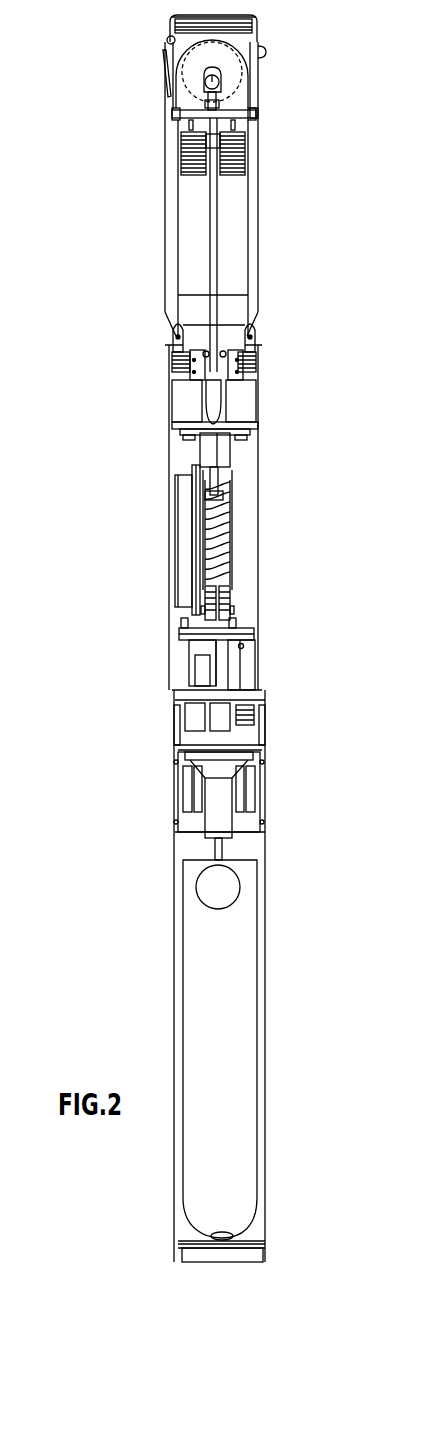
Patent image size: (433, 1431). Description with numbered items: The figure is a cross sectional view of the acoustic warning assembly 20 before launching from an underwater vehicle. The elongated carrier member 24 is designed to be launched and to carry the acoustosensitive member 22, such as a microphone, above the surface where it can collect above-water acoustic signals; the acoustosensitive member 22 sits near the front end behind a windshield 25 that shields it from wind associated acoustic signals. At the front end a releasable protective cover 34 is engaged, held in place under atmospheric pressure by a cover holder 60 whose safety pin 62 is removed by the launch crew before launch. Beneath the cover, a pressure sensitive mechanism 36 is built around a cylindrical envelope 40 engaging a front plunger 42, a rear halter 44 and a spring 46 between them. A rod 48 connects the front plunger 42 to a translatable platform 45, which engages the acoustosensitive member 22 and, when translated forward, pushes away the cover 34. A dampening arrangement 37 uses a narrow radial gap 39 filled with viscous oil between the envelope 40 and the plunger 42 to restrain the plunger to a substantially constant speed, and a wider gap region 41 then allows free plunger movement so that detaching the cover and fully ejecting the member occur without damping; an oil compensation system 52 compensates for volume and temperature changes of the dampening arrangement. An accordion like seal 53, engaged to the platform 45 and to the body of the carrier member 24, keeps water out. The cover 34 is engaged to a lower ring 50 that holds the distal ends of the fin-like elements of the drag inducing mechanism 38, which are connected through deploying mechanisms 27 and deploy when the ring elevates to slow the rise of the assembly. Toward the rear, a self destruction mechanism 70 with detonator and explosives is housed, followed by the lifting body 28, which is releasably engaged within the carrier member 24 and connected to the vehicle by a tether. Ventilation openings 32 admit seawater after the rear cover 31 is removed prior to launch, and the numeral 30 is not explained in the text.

The acoustic warning assembly 20 is at (21, 509).
The acoustosensitive member 22 is at (203, 85).
The carrier member 24 is at (250, 605).
The windshield 25 is at (182, 70).
The deploying mechanisms 27 is at (175, 346).
The lifting body 28 is at (197, 965).
The piston 30 is at (215, 806).
The rear cover 31 is at (187, 1252).
The ventilation openings 32 is at (173, 783).
The protective cover 34 is at (253, 45).
The pressure sensitive mechanism 36 is at (172, 566).
The dampening arrangement 37 is at (172, 494).
The drag inducing mechanism 38 is at (170, 251).
The narrow radial gap 39 is at (225, 507).
The cylindrical envelope 40 is at (210, 543).
The wider gap region 41 is at (172, 443).
The front plunger 42 is at (235, 497).
The rear halter 44 is at (228, 582).
The translatable platform 45 is at (182, 136).
The spring 46 is at (172, 533).
The rod 48 is at (210, 277).
The lower ring 50 is at (176, 125).
The oil compensation system 52 is at (175, 600).
The accordion like seal 53 is at (258, 152).
The cover holder 60 is at (170, 17).
The safety pin 62 is at (165, 53).
The self destruction mechanism 70 is at (178, 672).